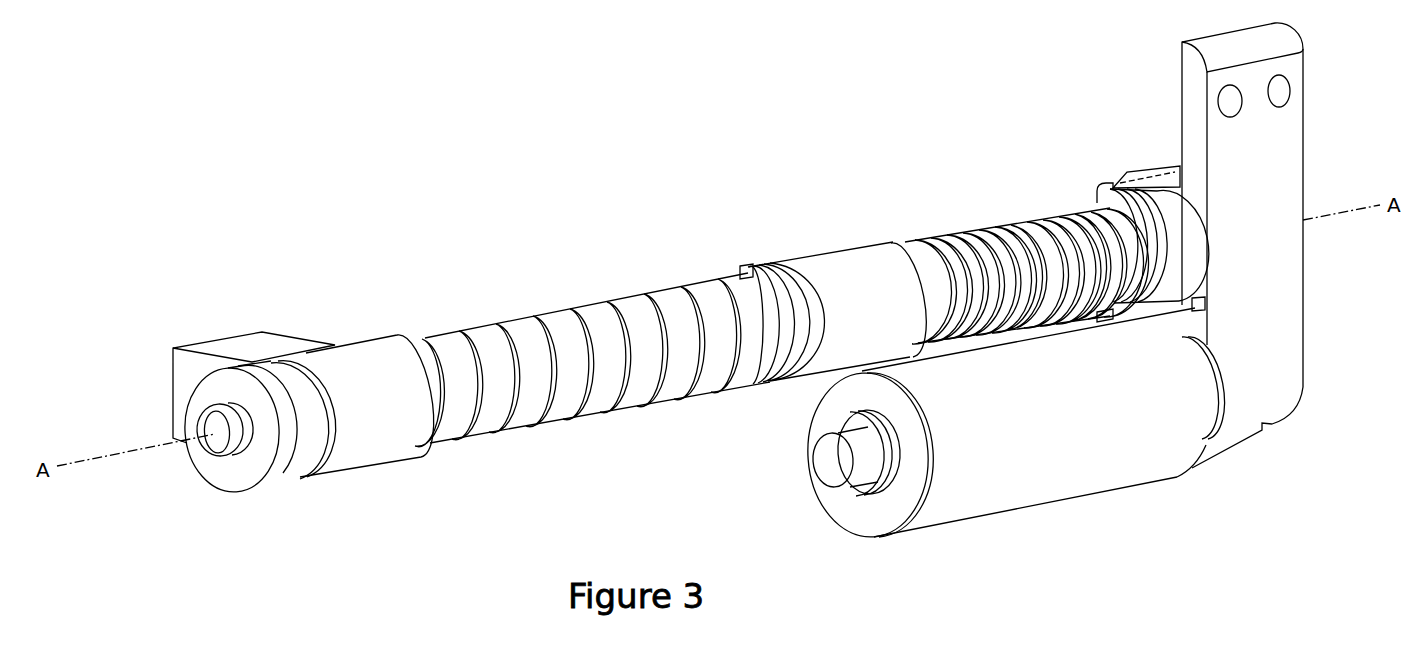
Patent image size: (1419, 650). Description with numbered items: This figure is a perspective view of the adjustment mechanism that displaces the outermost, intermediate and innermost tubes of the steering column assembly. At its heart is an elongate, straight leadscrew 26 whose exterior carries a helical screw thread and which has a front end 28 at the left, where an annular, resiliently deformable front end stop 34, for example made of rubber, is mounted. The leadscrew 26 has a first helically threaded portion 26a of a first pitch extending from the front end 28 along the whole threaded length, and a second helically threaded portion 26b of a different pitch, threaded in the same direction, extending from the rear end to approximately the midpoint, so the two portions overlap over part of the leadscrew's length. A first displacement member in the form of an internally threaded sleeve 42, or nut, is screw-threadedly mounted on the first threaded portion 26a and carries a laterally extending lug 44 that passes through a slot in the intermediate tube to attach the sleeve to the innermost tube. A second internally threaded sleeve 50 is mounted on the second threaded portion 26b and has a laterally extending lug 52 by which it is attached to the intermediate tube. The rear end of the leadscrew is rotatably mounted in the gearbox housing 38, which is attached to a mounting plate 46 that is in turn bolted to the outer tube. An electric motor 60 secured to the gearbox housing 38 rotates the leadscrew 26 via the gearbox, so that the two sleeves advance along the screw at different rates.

The leadscrew 26 is at (812, 322).
The first helically threaded portion 26a is at (647, 313).
The second helically threaded portion 26b is at (1027, 240).
The front end 28 is at (214, 448).
The front end stop 34 is at (282, 474).
The gearbox housing 38 is at (1104, 186).
The internally threaded sleeve 42 is at (362, 352).
The lug 44 is at (248, 347).
The mounting plate 46 is at (1273, 175).
The internally threaded sleeve 50 is at (869, 251).
The lug 52 is at (750, 262).
The electric motor 60 is at (1043, 422).